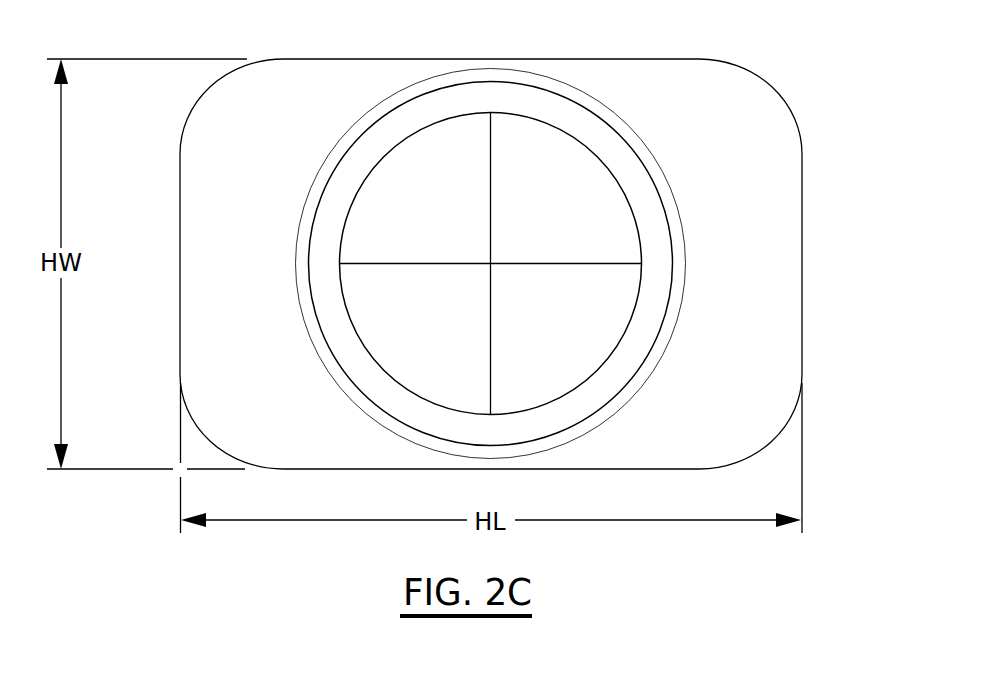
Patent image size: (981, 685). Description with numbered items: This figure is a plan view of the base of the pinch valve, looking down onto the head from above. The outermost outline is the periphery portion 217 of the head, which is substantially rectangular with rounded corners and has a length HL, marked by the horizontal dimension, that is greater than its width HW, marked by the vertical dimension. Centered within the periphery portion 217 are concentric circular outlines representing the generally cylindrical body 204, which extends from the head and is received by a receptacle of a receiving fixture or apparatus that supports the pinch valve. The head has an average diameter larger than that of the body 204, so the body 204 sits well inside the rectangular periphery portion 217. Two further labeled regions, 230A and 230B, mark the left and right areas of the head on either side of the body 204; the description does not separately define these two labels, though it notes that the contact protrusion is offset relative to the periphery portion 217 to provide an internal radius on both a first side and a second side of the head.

The body 204 is at (575, 102).
The periphery portion 217 is at (500, 264).
The first housing portion 230A is at (163, 208).
The second housing portion 230B is at (833, 167).